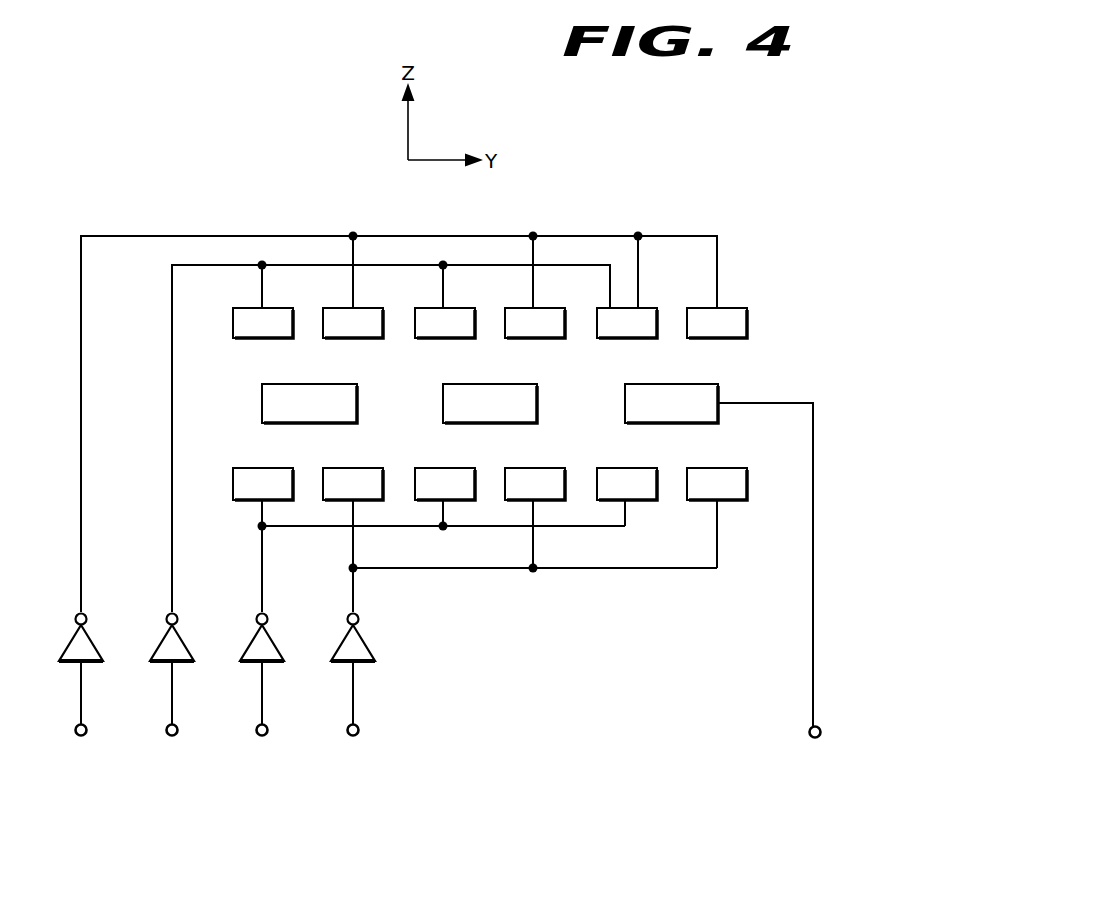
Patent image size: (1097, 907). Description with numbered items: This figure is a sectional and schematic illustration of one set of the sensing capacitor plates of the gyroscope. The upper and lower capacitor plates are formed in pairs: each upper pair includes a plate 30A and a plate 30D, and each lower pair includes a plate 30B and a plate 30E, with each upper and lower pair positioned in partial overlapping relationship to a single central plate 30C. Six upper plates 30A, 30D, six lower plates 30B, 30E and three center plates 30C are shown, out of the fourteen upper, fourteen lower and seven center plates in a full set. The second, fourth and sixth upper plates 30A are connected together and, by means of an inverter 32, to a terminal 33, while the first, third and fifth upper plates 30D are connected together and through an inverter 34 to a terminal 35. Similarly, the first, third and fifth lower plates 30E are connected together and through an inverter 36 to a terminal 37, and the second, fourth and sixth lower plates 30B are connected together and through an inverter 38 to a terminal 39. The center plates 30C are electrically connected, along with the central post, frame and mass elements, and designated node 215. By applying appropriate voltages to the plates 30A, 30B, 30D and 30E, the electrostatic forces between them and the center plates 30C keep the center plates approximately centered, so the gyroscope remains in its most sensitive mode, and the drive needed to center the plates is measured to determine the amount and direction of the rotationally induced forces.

The upper plate 30A is at (747, 325).
The lower plate 30B is at (747, 500).
The center plate 30C is at (718, 384).
The upper plate 30D is at (610, 338).
The lower plate 30E is at (657, 500).
The inverter 32 is at (64, 650).
The terminal 33 is at (75, 733).
The inverter 34 is at (154, 650).
The terminal 35 is at (166, 733).
The inverter 36 is at (280, 650).
The terminal 37 is at (268, 733).
The inverter 38 is at (371, 650).
The terminal 39 is at (359, 733).
The node 215 is at (815, 738).